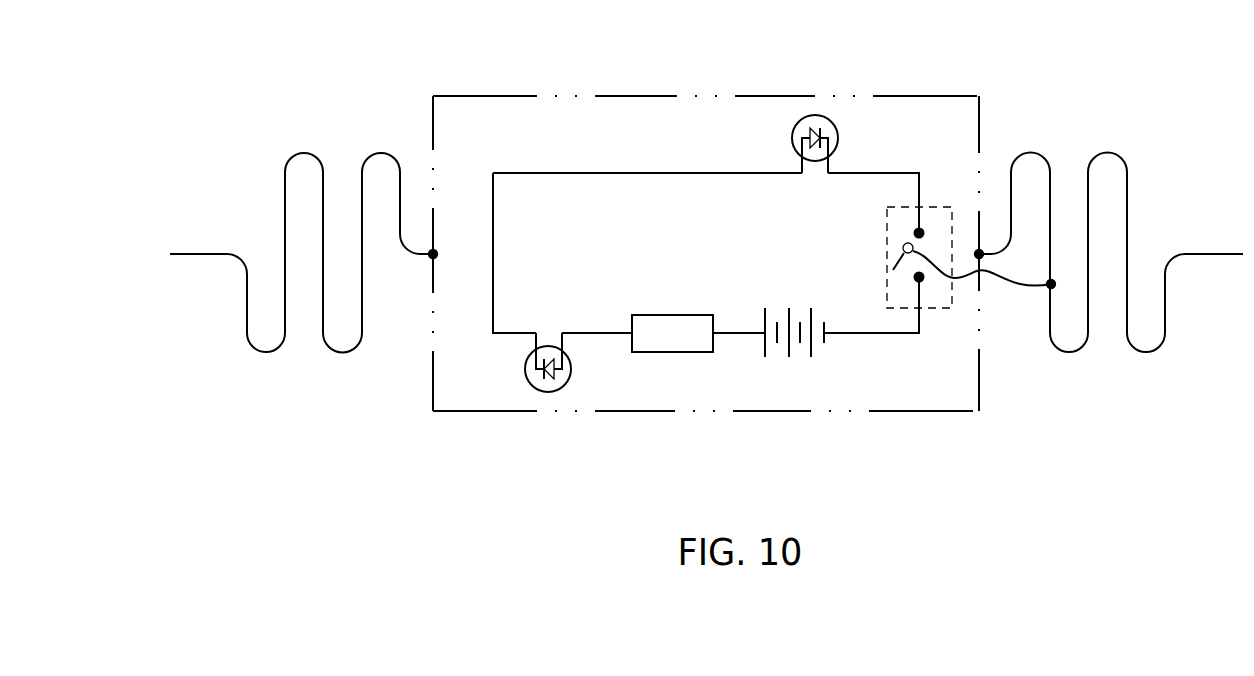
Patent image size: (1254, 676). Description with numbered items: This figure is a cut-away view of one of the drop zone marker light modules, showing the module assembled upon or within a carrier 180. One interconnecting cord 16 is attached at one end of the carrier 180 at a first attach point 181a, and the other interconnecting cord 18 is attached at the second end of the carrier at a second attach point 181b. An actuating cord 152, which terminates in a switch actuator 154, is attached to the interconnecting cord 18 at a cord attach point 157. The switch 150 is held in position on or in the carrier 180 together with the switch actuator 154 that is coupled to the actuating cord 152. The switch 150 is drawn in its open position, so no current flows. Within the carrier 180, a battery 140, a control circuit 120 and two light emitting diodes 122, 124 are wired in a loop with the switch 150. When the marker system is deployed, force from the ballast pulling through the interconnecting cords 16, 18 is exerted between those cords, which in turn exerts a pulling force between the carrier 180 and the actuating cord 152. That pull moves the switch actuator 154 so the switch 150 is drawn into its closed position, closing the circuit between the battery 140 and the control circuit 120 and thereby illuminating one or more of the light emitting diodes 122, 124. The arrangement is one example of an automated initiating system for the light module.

The interconnecting cord 16 is at (195, 254).
The interconnecting cord 18 is at (1222, 254).
The control circuit 120 is at (670, 352).
The light emitting diode 122 is at (528, 386).
The light emitting diode 124 is at (822, 115).
The battery 140 is at (813, 345).
The switch 150 is at (883, 184).
The actuating cord 152 is at (1000, 283).
The switch actuator 154 is at (903, 249).
The cord attach point 157 is at (1051, 284).
The carrier 180 is at (647, 96).
The first attach point 181a is at (433, 254).
The second attach point 181b is at (979, 254).